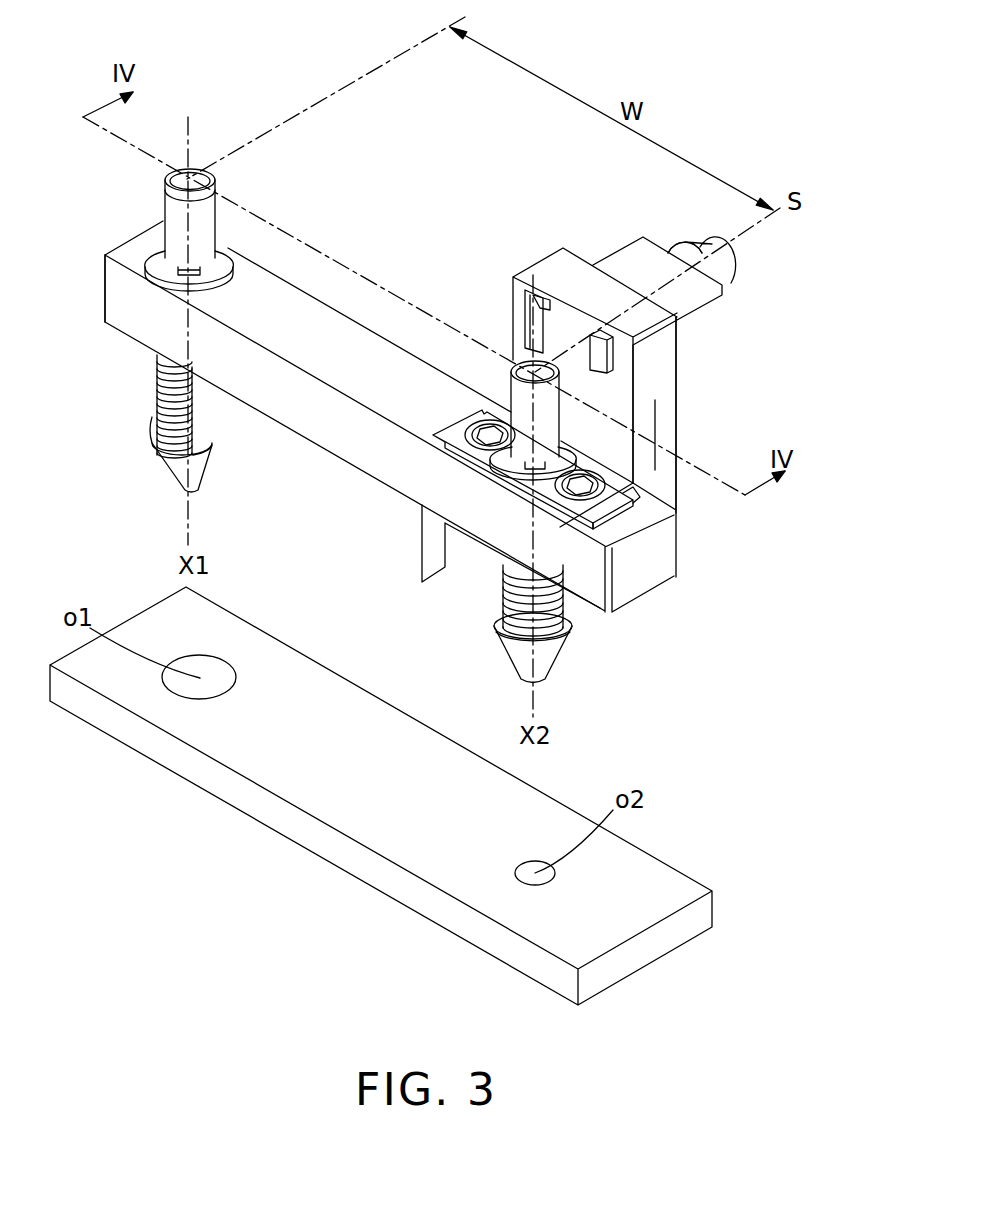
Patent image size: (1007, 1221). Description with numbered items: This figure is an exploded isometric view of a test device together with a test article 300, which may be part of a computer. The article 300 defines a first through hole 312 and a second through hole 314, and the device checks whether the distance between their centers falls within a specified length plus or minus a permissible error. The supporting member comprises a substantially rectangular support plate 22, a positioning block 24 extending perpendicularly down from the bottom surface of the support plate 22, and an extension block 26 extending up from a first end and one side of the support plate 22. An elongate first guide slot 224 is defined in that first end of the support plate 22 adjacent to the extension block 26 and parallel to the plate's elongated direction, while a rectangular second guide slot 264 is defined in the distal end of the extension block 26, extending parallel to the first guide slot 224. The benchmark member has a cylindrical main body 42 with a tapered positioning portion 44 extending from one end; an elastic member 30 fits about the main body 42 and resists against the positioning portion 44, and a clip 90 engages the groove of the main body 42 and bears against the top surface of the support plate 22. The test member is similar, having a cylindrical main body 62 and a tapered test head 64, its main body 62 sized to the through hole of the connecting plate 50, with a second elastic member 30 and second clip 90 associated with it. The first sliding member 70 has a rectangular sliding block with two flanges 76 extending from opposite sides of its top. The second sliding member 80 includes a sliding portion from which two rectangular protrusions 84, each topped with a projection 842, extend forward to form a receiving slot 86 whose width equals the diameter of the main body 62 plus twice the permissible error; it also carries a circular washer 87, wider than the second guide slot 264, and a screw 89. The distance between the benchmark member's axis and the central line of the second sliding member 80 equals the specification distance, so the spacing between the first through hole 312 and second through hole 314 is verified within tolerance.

The support plate 22 is at (123, 291).
The positioning block 24 is at (312, 507).
The extension block 26 is at (660, 430).
The second guide slot 264 is at (653, 407).
The first guide slot 224 is at (633, 500).
The elastic member 30 is at (157, 385).
The main body 42 is at (173, 203).
The positioning portion 44 is at (172, 462).
The connecting plate 50 is at (493, 553).
The main body 62 is at (530, 368).
The test head 64 is at (522, 657).
The first sliding member 70 is at (600, 518).
The flange 76 is at (562, 519).
The second sliding member 80 is at (627, 254).
The protrusion 84 is at (525, 327).
The projection 842 is at (538, 305).
The receiving slot 86 is at (560, 322).
The washer 87 is at (687, 243).
The screw 89 is at (593, 490).
The clip 90 is at (157, 263).
The article 300 is at (683, 836).
The first through hole 312 is at (200, 663).
The second through hole 314 is at (520, 862).